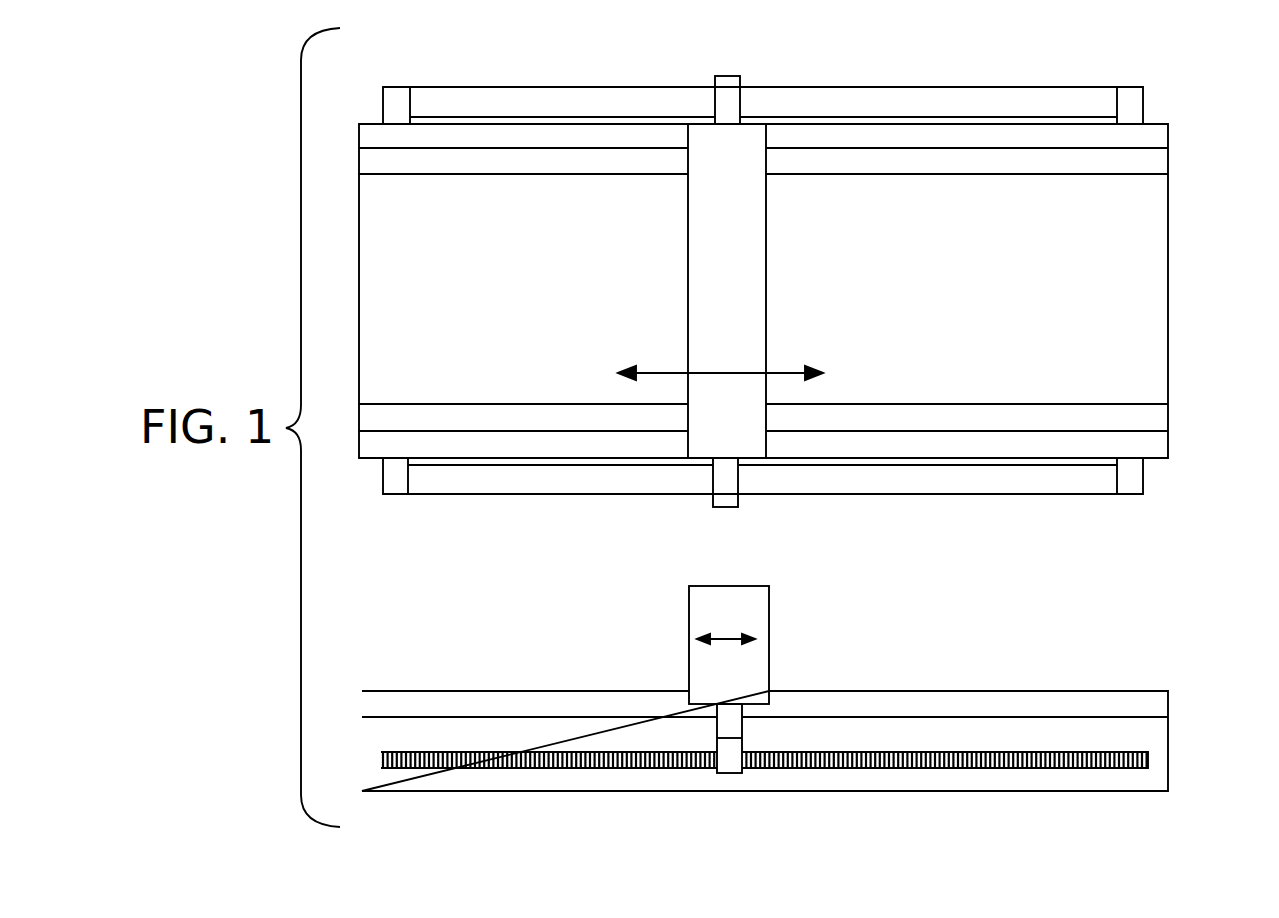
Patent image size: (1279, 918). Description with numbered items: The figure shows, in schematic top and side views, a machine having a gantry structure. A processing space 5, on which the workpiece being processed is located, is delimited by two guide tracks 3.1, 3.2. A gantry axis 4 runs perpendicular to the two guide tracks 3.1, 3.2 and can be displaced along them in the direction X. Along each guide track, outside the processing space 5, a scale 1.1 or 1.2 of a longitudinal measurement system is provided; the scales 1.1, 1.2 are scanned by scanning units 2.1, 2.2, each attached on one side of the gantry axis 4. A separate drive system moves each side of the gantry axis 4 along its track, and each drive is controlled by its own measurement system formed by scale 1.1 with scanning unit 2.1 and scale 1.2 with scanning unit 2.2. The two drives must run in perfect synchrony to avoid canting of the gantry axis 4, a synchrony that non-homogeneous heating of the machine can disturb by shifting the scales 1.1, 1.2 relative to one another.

The scale 1.1 is at (482, 103).
The scale 1.2 is at (867, 478).
The scanning unit 2.1 is at (730, 95).
The scanning unit 2.2 is at (733, 477).
The guide track 3.1 is at (958, 135).
The guide track 3.2 is at (990, 448).
The gantry axis 4 is at (758, 310).
The processing space 5 is at (1153, 300).